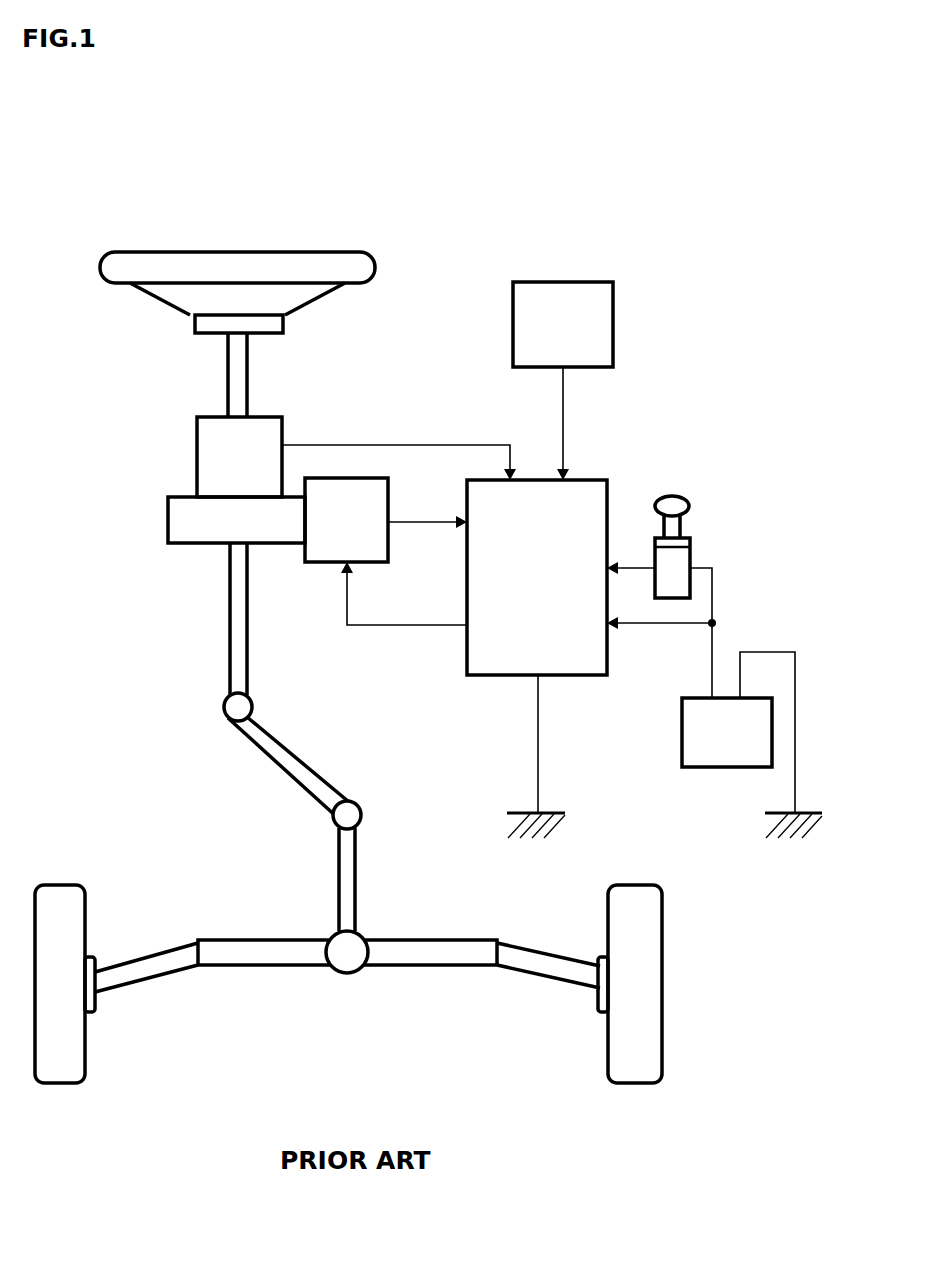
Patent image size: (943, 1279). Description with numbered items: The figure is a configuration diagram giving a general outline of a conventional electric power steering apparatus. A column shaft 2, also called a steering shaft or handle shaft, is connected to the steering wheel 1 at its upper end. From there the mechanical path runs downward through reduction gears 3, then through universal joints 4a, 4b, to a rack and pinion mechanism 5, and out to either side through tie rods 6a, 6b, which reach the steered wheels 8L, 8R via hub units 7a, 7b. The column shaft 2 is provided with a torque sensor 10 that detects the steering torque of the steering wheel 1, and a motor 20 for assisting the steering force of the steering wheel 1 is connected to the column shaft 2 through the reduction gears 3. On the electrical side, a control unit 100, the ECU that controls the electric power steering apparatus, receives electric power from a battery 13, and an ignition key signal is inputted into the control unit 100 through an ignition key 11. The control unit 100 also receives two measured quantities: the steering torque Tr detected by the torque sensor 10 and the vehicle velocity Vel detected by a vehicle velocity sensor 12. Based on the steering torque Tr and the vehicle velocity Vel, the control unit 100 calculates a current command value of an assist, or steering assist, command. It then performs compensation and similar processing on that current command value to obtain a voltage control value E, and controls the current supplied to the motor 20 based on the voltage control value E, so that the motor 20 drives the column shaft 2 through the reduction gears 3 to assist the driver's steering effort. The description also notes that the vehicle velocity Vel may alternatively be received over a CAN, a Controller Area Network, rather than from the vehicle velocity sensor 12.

The steering wheel 1 is at (375, 258).
The column shaft 2 is at (228, 377).
The reduction gears 3 is at (168, 524).
The universal joint 4a is at (224, 710).
The universal joint 4b is at (333, 820).
The rack and pinion mechanism 5 is at (365, 928).
The tie rod 6a is at (125, 960).
The tie rod 6b is at (528, 948).
The hub unit 7a is at (97, 1005).
The hub unit 7b is at (597, 1010).
The steered wheel 8L is at (85, 1068).
The steered wheel 8R is at (608, 1068).
The torque sensor 10 is at (197, 447).
The ignition key 11 is at (690, 506).
The vehicle velocity sensor 12 is at (613, 296).
The battery 13 is at (682, 722).
The motor 20 is at (388, 486).
The control unit 100 is at (607, 487).
The steering torque Tr is at (416, 445).
The vehicle velocity Vel is at (566, 404).
The voltage control value E is at (414, 627).